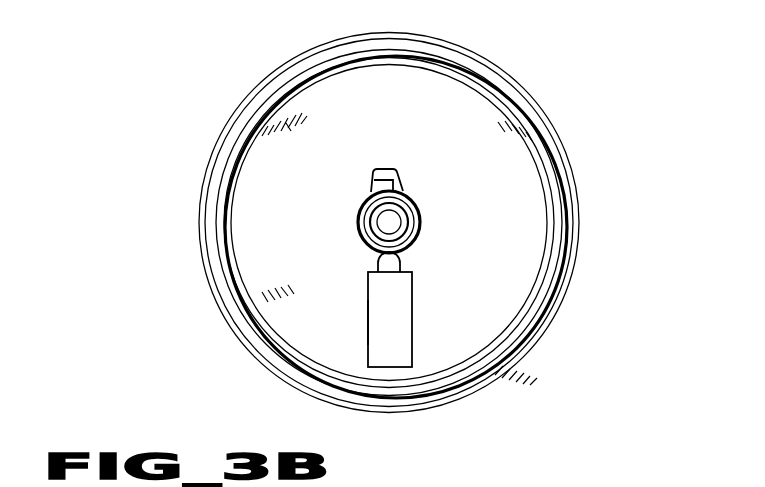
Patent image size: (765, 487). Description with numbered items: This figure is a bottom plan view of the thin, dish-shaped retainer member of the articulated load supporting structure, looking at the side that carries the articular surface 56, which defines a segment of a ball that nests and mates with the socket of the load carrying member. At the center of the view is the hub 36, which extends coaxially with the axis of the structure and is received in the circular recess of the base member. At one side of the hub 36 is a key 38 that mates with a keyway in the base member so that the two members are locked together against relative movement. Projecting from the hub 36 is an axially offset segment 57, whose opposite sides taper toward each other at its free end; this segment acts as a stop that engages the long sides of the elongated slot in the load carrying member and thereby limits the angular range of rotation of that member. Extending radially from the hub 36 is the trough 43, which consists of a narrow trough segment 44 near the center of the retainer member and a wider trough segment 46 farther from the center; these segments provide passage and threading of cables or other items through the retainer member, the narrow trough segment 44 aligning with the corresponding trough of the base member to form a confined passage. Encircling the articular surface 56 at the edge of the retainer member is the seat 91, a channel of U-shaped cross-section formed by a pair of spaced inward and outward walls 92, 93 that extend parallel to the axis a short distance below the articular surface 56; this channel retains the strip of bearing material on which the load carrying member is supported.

The hub 36 is at (418, 212).
The key 38 is at (403, 180).
The trough 43 is at (417, 321).
The narrow trough segment 44 is at (391, 262).
The wider trough segment 46 is at (378, 322).
The articular surface 56 is at (304, 220).
The axially offset segment 57 is at (393, 168).
The seat 91 is at (540, 298).
The inward wall 92 is at (566, 226).
The outward wall 93 is at (547, 237).